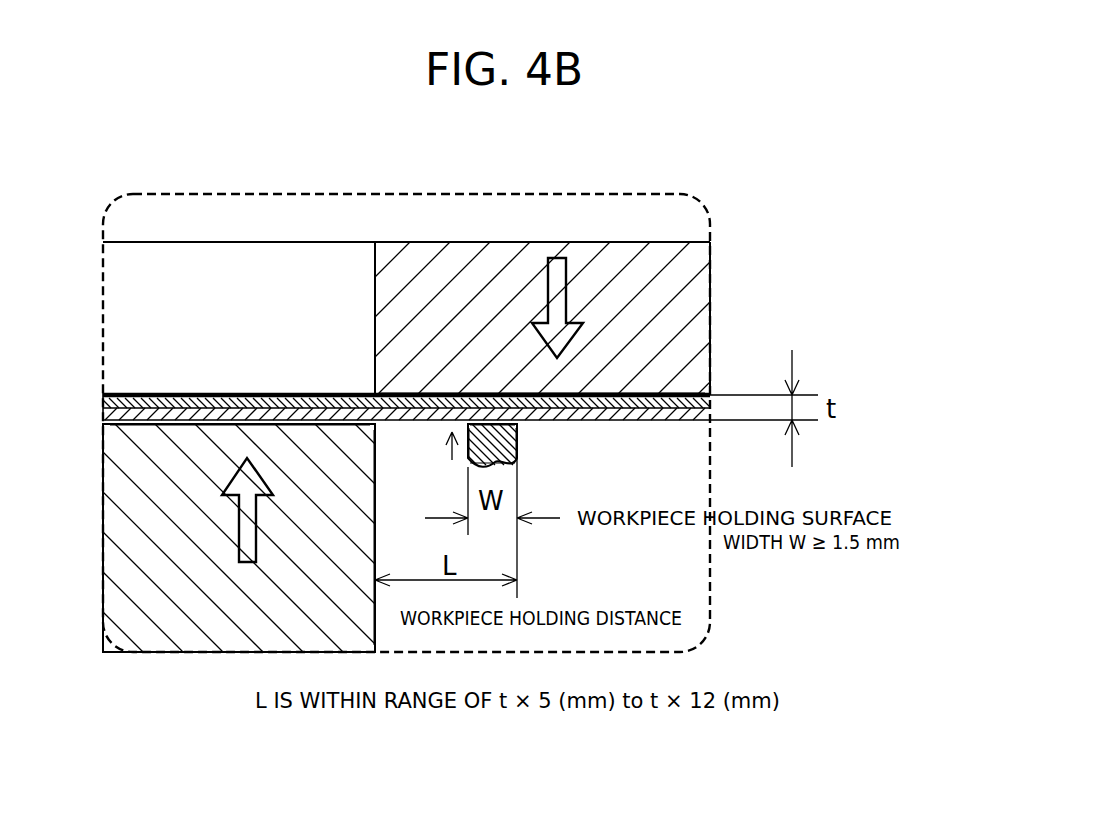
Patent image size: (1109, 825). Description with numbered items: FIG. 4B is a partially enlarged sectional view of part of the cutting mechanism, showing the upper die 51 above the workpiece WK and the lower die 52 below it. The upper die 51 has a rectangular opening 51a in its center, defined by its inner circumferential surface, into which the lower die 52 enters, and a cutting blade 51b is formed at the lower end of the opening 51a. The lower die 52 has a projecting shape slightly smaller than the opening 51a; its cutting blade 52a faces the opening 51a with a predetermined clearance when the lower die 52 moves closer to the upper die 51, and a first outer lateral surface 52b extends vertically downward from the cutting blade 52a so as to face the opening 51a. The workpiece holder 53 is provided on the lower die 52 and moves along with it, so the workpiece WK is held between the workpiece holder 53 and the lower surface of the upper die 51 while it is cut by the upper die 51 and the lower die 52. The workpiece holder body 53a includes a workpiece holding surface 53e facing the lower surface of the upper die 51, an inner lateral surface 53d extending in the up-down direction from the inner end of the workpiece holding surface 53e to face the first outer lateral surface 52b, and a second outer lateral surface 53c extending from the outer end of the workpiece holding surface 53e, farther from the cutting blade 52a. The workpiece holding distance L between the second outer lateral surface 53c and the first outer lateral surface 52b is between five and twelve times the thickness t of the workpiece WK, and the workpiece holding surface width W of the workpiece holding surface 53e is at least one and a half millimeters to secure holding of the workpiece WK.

The upper die 51 is at (630, 242).
The opening 51a is at (373, 293).
The cutting blade 51b is at (370, 392).
The lower die 52 is at (170, 652).
The cutting blade 52a is at (366, 406).
The first outer lateral surface 52b is at (375, 487).
The workpiece holder 53 is at (601, 443).
The workpiece holder body 53a is at (518, 465).
The second outer lateral surface 53c is at (518, 447).
The inner lateral surface 53d is at (468, 456).
The workpiece holding surface 53e is at (518, 424).
The workpiece WK is at (165, 393).